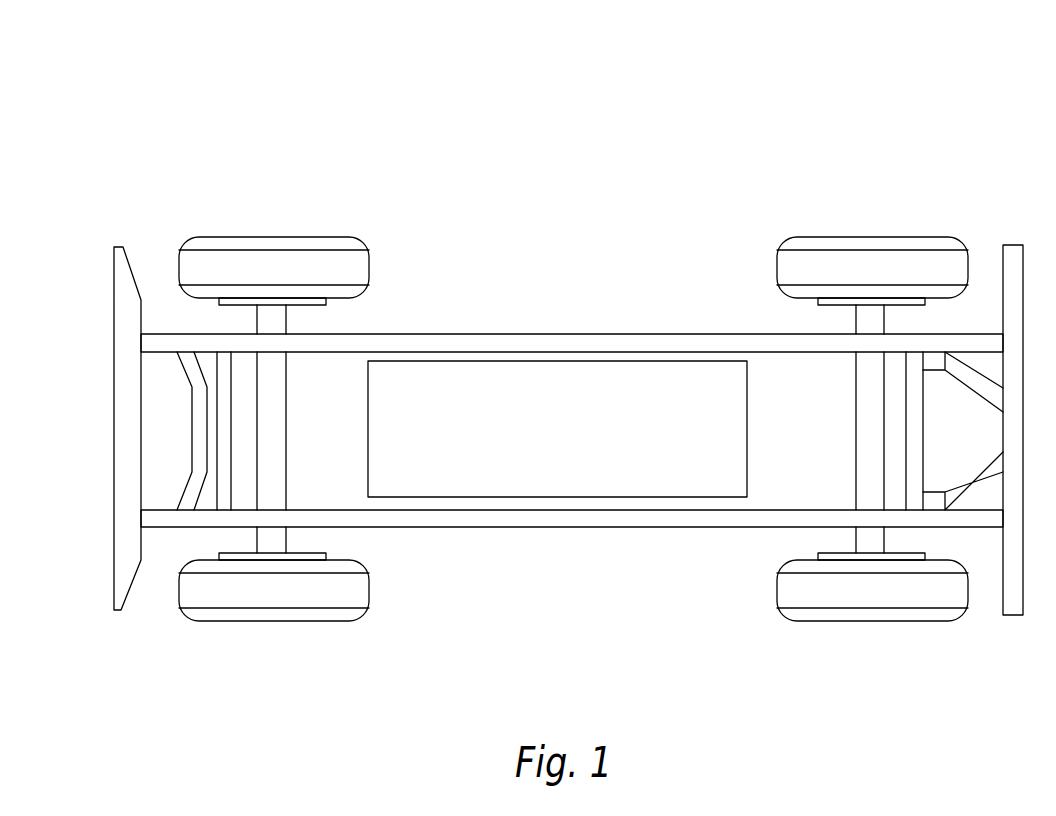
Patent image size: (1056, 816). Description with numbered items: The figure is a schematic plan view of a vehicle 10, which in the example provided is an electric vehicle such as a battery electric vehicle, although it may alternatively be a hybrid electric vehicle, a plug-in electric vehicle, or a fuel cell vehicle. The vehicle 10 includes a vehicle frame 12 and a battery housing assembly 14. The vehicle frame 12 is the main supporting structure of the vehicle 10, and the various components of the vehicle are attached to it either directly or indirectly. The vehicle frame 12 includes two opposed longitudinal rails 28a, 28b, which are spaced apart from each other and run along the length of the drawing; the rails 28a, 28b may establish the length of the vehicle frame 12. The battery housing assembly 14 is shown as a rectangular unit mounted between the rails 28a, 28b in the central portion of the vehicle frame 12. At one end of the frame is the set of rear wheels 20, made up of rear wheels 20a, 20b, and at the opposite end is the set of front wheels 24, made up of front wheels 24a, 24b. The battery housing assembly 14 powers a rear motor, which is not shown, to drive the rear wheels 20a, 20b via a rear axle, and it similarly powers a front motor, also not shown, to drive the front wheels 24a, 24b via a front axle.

The vehicle 10 is at (95, 143).
The vehicle frame 12 is at (484, 254).
The battery housing assembly 14 is at (643, 356).
The set of rear wheels 20 is at (824, 212).
The rear wheel 20a is at (895, 257).
The rear wheel 20b is at (885, 600).
The set of front wheels 24 is at (258, 196).
The front wheel 24a is at (312, 255).
The front wheel 24b is at (263, 592).
The longitudinal rail 28a is at (527, 343).
The longitudinal rail 28b is at (654, 520).